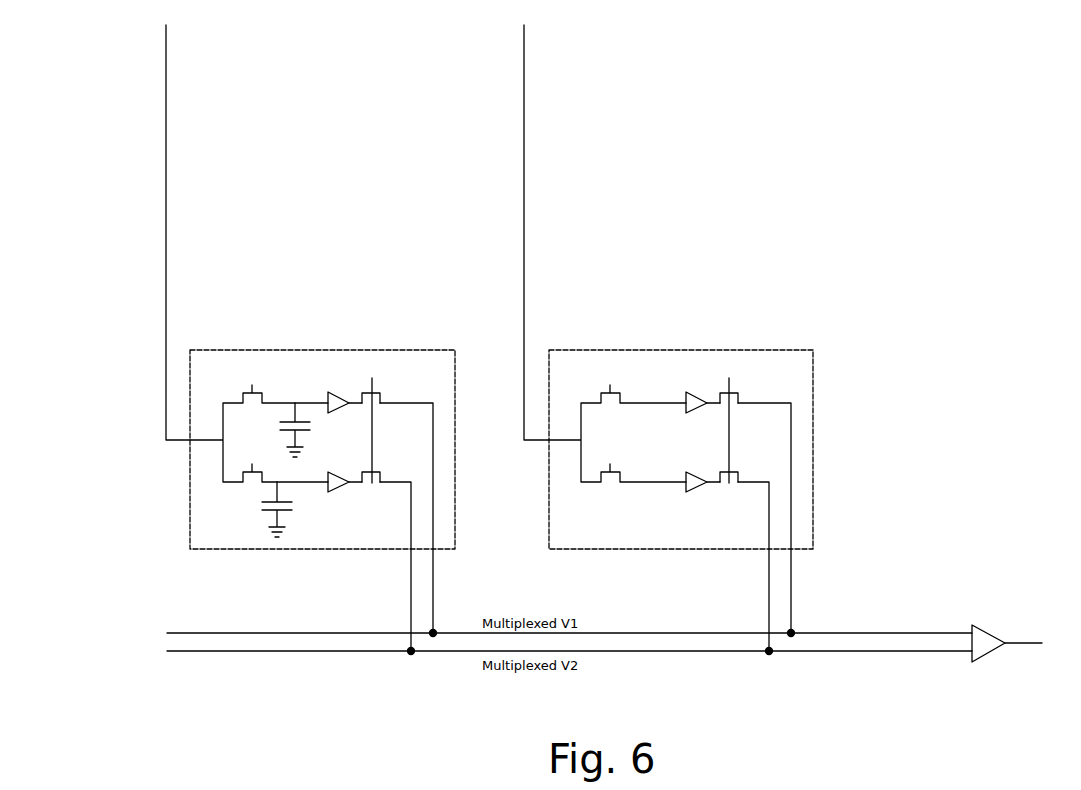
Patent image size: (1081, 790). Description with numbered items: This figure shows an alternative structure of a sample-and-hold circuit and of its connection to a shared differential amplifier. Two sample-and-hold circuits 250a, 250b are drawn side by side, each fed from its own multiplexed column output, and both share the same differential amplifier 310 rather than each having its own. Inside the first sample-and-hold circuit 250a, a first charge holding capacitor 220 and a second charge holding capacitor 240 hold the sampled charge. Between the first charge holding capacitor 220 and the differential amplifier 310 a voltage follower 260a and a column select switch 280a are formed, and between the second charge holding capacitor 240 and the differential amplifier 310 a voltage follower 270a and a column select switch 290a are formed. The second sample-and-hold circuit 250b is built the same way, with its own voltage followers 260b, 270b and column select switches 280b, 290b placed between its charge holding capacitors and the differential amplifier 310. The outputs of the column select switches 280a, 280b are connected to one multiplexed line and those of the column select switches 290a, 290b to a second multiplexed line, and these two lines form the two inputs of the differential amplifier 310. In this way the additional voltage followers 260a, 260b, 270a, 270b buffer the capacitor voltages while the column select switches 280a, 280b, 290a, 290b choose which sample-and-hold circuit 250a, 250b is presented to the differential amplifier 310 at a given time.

The first charge holding capacitor 220 is at (283, 413).
The second charge holding capacitor 240 is at (263, 510).
The sample-and-hold circuit 250a is at (207, 538).
The sample-and-hold circuit 250b is at (572, 538).
The voltage follower 260a is at (333, 395).
The voltage follower 260b is at (691, 395).
The voltage follower 270a is at (350, 483).
The voltage follower 270b is at (708, 485).
The column select switch 280a is at (370, 388).
The column select switch 280b is at (727, 388).
The column select switch 290a is at (380, 472).
The column select switch 290b is at (738, 472).
The differential amplifier 310 is at (973, 627).